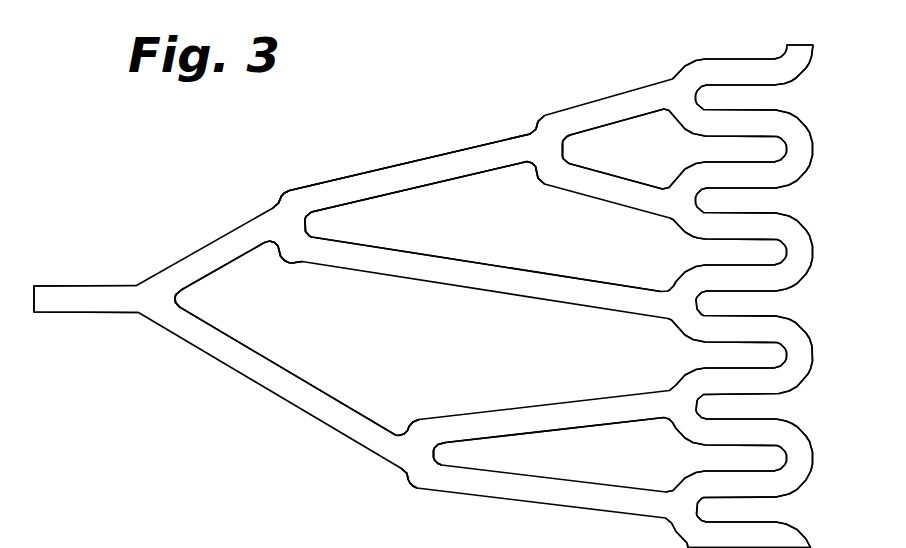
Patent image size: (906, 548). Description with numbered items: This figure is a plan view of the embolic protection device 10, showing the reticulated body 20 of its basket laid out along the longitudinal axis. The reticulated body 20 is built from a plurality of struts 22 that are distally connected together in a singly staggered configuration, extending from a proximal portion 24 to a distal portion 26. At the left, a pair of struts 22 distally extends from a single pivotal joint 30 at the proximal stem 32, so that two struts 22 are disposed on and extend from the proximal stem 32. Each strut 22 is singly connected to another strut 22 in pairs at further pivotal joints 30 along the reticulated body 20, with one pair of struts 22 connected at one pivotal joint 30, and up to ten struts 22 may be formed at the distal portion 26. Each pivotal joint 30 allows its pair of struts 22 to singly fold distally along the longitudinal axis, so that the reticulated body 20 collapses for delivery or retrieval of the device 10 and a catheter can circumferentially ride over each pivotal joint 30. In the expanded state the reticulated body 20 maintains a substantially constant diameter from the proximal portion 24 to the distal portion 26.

The embolic protection device 10 is at (148, 157).
The reticulated body 20 is at (318, 180).
The struts 22 is at (218, 262).
The proximal portion 24 is at (183, 340).
The distal portion 26 is at (645, 87).
The pivotal joints 30 is at (157, 298).
The proximal stem 32 is at (60, 298).